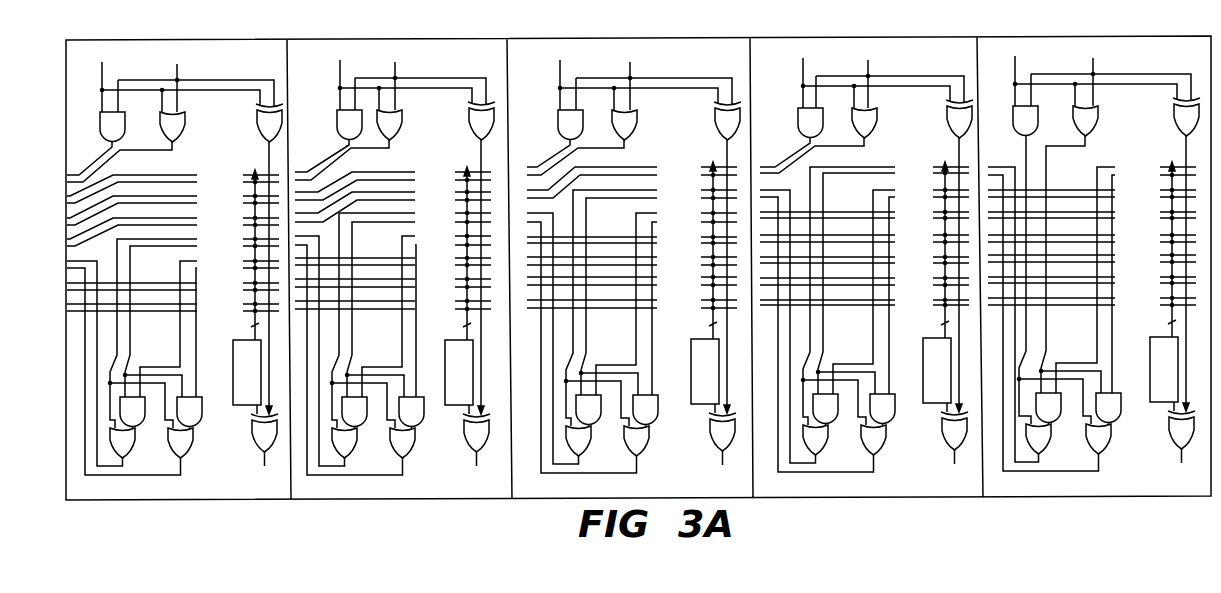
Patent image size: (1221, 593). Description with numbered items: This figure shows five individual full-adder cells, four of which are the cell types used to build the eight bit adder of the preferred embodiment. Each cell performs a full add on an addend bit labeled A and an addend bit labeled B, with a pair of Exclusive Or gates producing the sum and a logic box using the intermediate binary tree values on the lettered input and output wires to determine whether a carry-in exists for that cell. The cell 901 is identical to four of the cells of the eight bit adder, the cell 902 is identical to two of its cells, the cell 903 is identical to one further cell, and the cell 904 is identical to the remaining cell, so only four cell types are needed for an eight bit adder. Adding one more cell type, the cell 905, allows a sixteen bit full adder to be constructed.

The cell 905 is at (128, 501).
The cell 904 is at (320, 501).
The cell 903 is at (565, 501).
The cell 902 is at (893, 499).
The cell 901 is at (1083, 499).